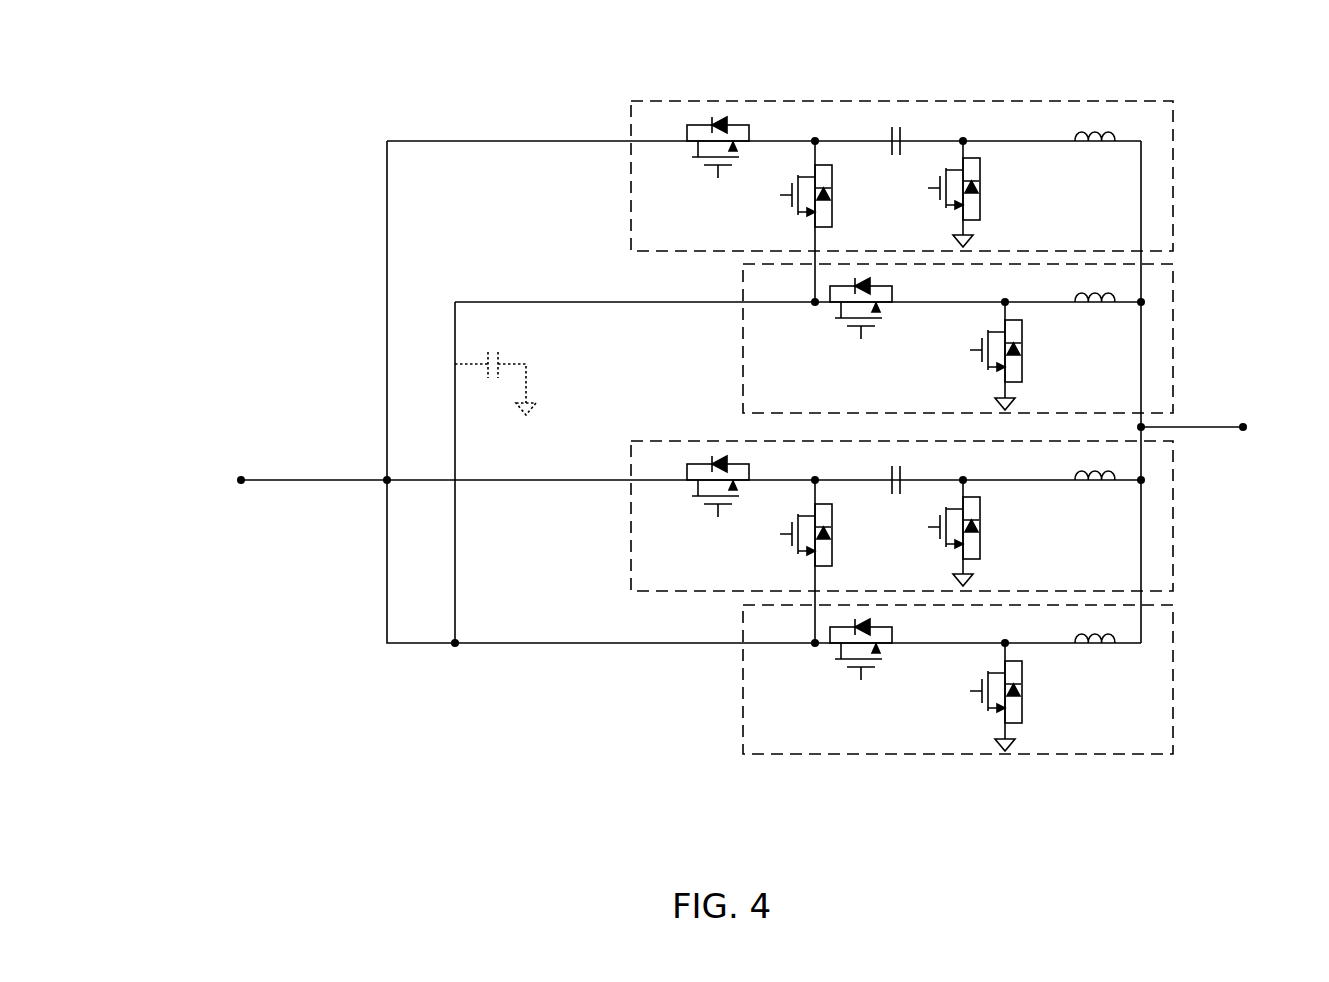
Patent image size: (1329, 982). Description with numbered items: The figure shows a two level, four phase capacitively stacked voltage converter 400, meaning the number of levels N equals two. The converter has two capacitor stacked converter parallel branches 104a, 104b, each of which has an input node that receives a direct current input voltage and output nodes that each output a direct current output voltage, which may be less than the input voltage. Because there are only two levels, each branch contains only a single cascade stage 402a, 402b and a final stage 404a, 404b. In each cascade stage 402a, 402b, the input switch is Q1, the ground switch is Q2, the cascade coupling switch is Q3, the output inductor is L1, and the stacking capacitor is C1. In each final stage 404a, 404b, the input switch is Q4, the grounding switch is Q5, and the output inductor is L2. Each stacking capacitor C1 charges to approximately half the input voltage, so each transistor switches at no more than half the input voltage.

The two level—four phase capacitively stacked voltage converter 400 is at (297, 99).
The capacitor stacked converter parallel branch 104a is at (1183, 92).
The capacitor stacked converter parallel branch 104b is at (1183, 447).
The cascade stage 402a is at (780, 201).
The final stage 404a is at (814, 338).
The cascade stage 402b is at (902, 542).
The final stage 404b is at (958, 679).